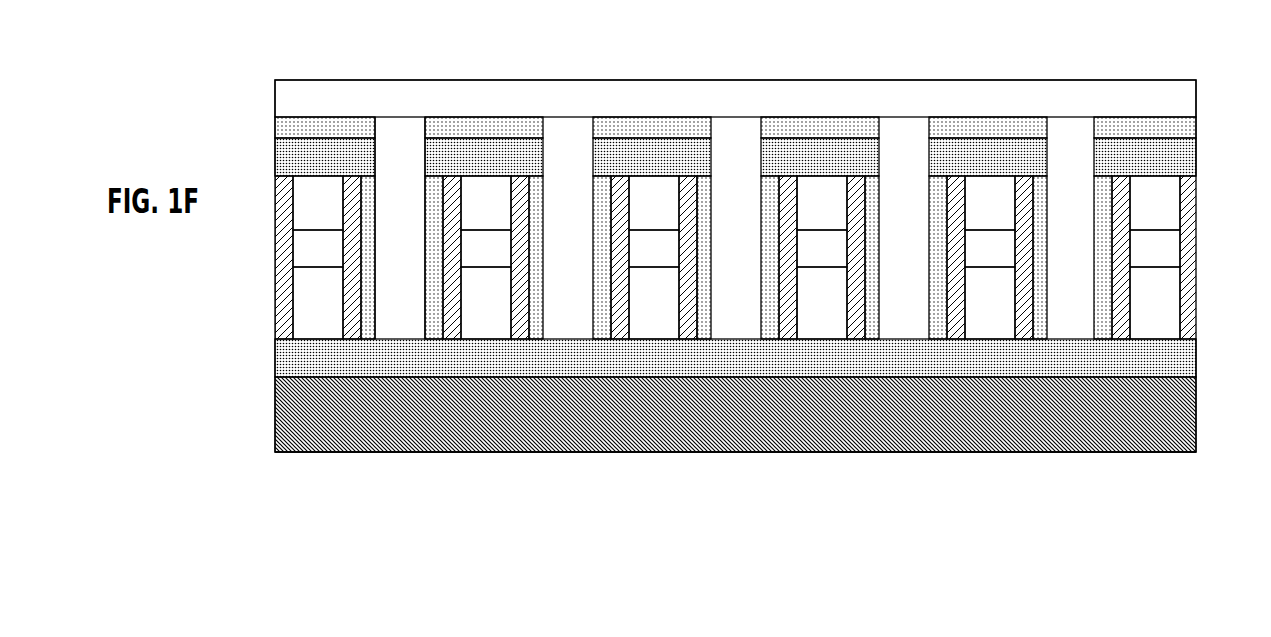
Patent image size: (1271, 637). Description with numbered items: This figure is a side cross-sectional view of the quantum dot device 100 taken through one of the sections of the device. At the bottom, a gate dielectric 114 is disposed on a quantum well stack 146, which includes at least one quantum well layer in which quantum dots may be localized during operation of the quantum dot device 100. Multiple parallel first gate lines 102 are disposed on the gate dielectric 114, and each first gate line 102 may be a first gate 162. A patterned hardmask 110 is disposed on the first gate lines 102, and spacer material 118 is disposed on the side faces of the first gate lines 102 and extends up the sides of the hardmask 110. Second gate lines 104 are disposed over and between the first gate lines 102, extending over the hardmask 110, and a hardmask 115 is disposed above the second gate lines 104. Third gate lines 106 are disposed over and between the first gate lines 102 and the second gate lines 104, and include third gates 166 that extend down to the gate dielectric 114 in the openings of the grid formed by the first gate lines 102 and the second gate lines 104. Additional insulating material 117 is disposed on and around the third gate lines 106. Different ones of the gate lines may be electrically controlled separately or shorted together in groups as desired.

The quantum dot device 100 is at (247, 83).
The first gate lines 102 is at (1169, 313).
The second gate lines 104 is at (1169, 211).
The third gate lines 106 is at (750, 112).
The hardmask 110 is at (1169, 259).
The gate dielectric 114 is at (750, 369).
The hardmask 115 is at (313, 169).
The insulating material 117 is at (275, 124).
The spacer material 118 is at (275, 287).
The quantum well stack 146 is at (750, 423).
The first gate 162 is at (866, 452).
The third gate 166 is at (402, 299).